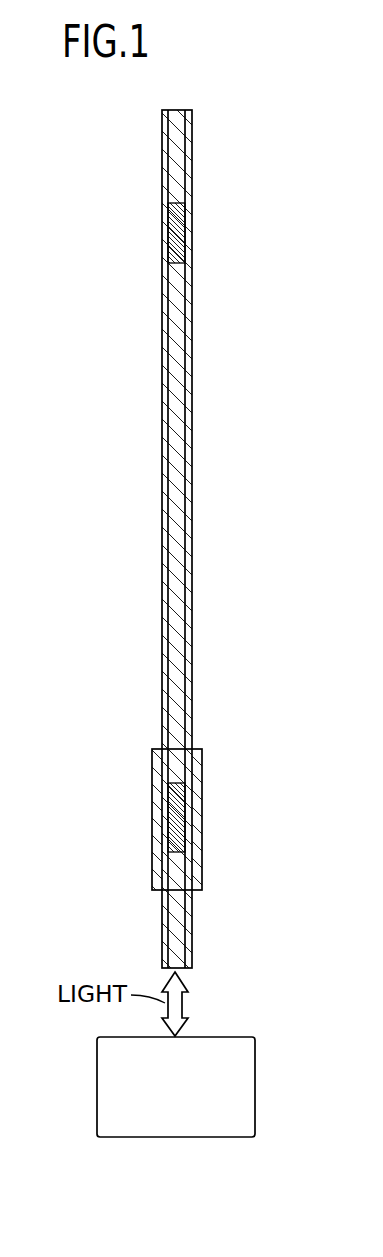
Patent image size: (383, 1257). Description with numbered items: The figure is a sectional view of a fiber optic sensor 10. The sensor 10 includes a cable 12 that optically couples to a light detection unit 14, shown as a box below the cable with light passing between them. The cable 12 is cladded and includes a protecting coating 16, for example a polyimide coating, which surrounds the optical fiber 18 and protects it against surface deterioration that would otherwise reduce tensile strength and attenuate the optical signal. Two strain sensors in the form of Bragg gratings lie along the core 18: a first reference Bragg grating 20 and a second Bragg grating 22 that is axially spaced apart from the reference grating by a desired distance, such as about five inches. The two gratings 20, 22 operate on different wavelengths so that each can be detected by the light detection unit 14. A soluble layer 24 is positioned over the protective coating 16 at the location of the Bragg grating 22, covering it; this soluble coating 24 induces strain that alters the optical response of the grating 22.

The fiber optic sensor 10 is at (226, 493).
The cable 12 is at (180, 105).
The light detection unit 14 is at (257, 1085).
The protecting coating 16 is at (193, 322).
The optical fiber 18 is at (178, 412).
The reference Bragg grating 20 is at (193, 225).
The Bragg grating 22 is at (177, 812).
The soluble layer 24 is at (152, 847).